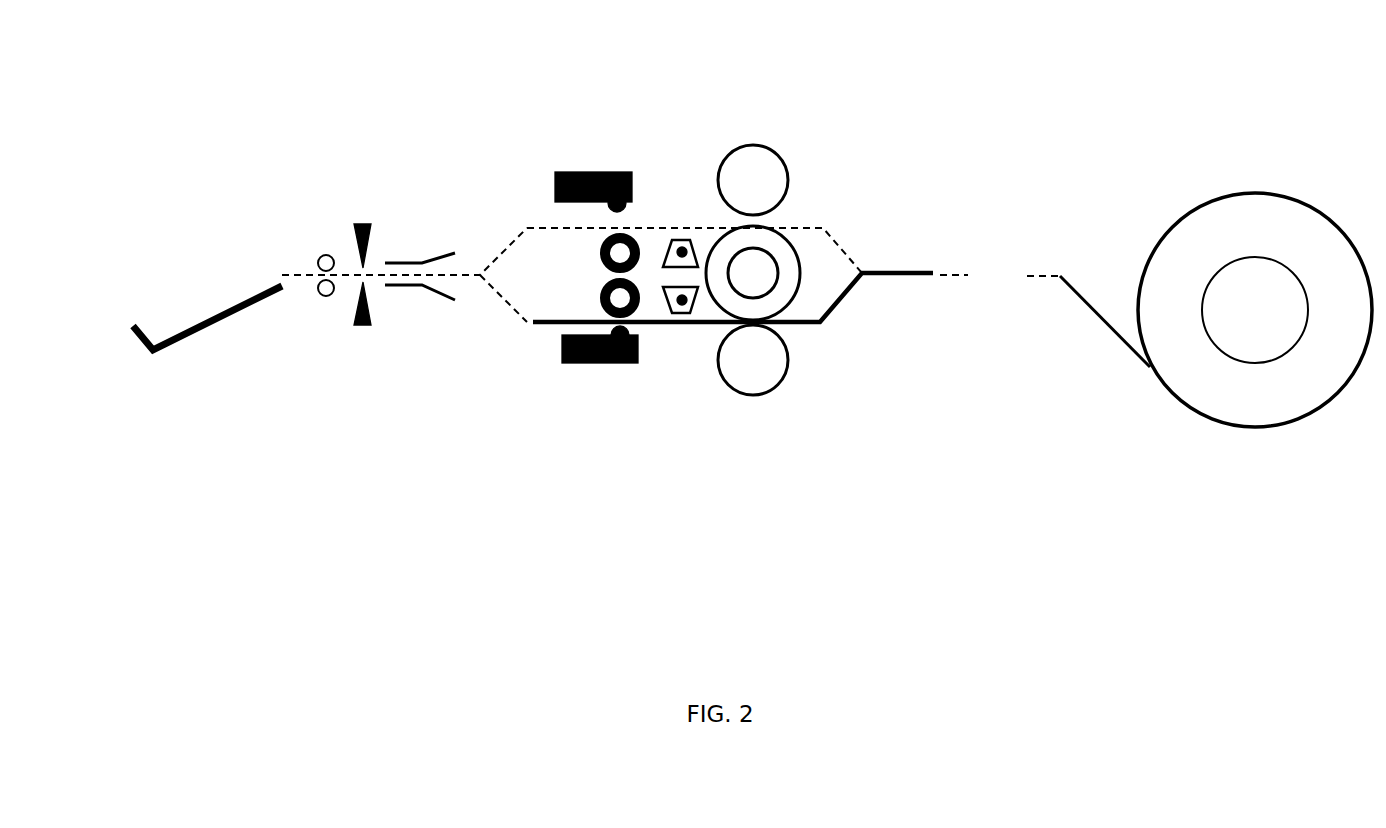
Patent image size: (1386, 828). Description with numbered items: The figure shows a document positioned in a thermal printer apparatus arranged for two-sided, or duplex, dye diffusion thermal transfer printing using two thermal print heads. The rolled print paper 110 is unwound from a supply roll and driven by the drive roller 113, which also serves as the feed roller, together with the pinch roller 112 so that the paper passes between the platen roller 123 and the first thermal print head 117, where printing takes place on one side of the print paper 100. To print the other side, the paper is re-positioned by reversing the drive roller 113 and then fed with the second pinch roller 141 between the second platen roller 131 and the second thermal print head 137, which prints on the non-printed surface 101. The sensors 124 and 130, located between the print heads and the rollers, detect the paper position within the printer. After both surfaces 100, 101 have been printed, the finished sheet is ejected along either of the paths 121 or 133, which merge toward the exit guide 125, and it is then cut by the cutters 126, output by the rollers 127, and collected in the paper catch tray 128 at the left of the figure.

The print paper surface 100 is at (847, 308).
The non-printed surface 101 is at (767, 194).
The rolled print paper 110 is at (1200, 433).
The pinch roller 112 is at (762, 393).
The drive roller 113 is at (792, 308).
The thermal print head 117 is at (601, 370).
The path 121 is at (510, 313).
The platen roller 123 is at (558, 413).
The sensor 124 is at (682, 300).
The exit guide 125 is at (432, 302).
The cutters 126 is at (348, 240).
The rollers 127 is at (313, 302).
The paper catch tray 128 is at (215, 310).
The sensor 130 is at (682, 252).
The platen roller 131 is at (537, 154).
The path 133 is at (508, 243).
The second thermal print head 137 is at (597, 172).
The pinch roller 141 is at (777, 148).